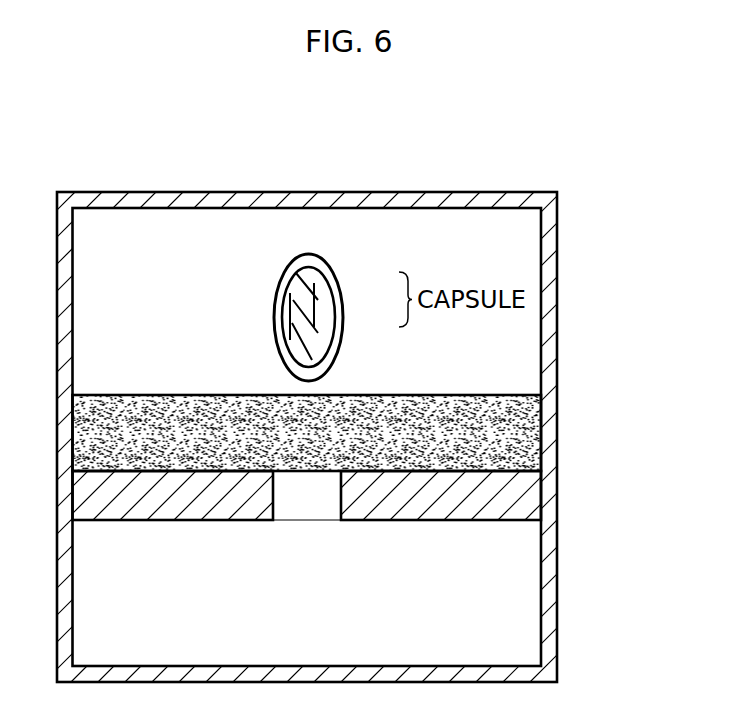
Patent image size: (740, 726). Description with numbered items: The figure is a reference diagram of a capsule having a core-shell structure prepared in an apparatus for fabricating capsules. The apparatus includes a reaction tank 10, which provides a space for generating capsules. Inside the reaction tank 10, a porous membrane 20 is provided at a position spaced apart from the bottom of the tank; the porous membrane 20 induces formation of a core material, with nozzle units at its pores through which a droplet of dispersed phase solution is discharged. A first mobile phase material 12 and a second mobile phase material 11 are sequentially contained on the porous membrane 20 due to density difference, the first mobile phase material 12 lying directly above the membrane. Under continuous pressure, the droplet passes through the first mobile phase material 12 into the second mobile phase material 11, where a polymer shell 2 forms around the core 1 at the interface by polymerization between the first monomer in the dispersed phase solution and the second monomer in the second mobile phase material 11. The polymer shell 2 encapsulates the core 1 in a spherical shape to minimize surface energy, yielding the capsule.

The reaction tank 10 is at (311, 192).
The second mobile phase material 11 is at (527, 337).
The first mobile phase material 12 is at (527, 433).
The porous membrane 20 is at (527, 495).
The core 1 is at (320, 295).
The polymer shell 2 is at (335, 324).